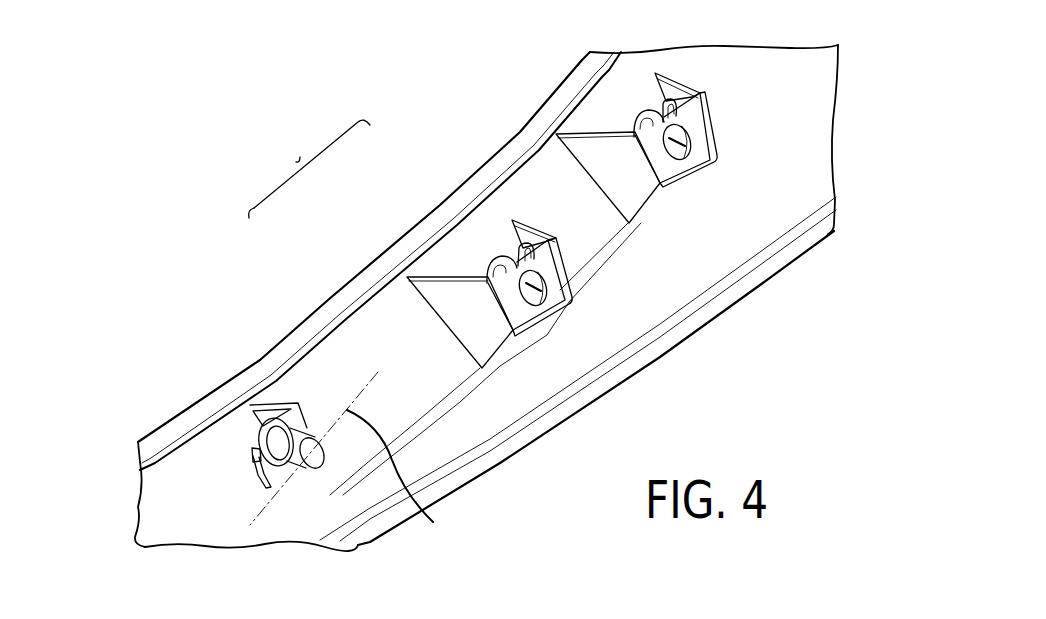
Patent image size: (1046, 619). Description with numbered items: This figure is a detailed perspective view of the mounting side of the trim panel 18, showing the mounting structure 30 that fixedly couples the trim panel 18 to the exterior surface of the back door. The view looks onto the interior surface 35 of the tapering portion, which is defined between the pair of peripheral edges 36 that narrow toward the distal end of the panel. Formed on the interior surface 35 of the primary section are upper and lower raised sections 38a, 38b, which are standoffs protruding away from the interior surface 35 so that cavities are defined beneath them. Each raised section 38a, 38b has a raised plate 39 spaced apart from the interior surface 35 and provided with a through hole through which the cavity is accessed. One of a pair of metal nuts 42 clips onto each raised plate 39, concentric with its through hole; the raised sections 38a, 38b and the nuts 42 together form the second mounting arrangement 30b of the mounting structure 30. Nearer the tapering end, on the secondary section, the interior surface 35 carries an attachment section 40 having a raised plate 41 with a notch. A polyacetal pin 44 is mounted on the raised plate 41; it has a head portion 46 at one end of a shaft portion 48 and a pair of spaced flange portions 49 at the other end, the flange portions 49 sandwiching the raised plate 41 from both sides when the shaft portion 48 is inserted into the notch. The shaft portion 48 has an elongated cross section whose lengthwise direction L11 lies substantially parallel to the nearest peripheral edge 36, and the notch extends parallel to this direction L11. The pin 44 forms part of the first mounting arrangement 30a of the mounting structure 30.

The trim panel 18 is at (813, 93).
The interior surface 35 is at (815, 168).
The peripheral edges 36 is at (533, 113).
The mounting structure 30 is at (309, 169).
The first mounting arrangement 30a is at (303, 394).
The second mounting arrangement 30b is at (566, 253).
The upper raised section 38a is at (556, 153).
The lower raised section 38b is at (541, 326).
The raised plate 39 is at (548, 245).
The nuts 42 is at (553, 293).
The attachment section 40 is at (278, 403).
The raised plate 41 is at (310, 413).
The pin 44 is at (303, 467).
The head portion 46 is at (320, 465).
The shaft portion 48 is at (290, 466).
The flange portions 49 is at (254, 458).
The lengthwise direction L11 is at (362, 457).